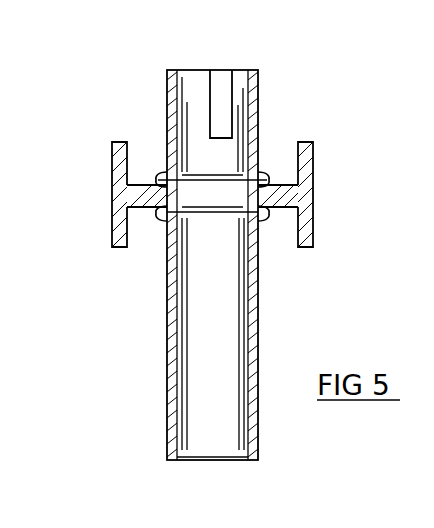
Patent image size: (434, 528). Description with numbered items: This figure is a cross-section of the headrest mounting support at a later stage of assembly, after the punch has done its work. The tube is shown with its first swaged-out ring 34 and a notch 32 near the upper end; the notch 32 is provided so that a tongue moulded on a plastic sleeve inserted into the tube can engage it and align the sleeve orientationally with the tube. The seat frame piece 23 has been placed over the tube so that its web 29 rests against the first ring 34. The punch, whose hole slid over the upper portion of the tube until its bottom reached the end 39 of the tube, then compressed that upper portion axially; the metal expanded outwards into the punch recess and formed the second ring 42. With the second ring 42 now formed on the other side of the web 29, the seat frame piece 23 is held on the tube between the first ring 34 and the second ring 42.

The seat frame piece 23 is at (111, 207).
The web 29 is at (147, 193).
The notch 32 is at (220, 85).
The first swaged-out ring 34 is at (263, 177).
The end of the tube 39 is at (233, 460).
The second ring 42 is at (270, 213).